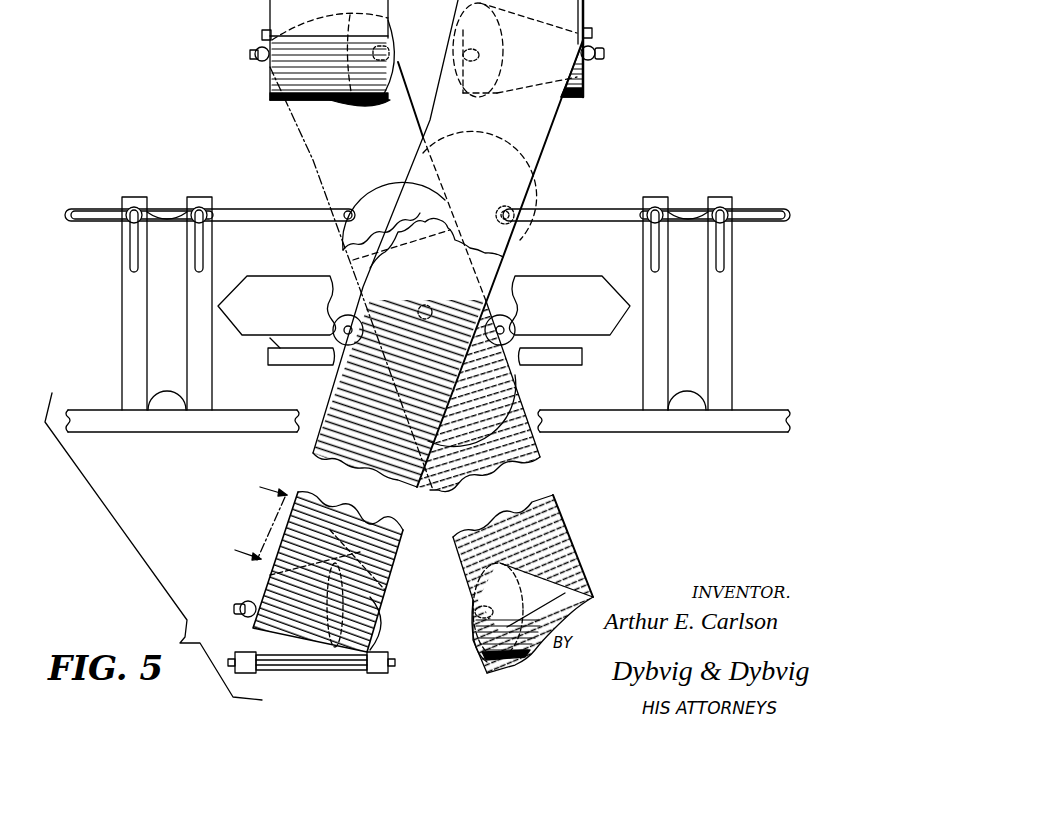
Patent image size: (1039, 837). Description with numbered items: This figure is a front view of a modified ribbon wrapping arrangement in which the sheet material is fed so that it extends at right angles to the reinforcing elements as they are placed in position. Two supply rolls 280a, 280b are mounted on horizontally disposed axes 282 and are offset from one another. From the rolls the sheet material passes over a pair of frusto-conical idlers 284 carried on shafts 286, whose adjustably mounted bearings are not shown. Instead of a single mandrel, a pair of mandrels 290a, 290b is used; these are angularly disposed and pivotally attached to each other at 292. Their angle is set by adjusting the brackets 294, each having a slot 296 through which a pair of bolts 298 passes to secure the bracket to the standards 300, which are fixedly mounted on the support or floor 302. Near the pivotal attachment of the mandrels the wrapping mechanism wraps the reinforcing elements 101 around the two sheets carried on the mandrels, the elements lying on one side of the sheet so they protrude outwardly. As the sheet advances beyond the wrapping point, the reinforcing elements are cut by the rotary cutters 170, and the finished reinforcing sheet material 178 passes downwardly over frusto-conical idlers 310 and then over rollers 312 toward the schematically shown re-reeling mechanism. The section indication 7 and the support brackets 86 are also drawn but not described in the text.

The roll 280a is at (299, 53).
The roll 280b is at (548, 48).
The horizontally disposed axis 282 is at (262, 34).
The frusto-conical idler 284 is at (462, 16).
The shaft 286 is at (257, 56).
The mandrel 290a is at (367, 160).
The mandrel 290b is at (505, 141).
The pivotal attachment point 292 is at (425, 304).
The bracket 294 is at (270, 212).
The slot 296 is at (84, 215).
The bolt 298 is at (135, 207).
The standard 300 is at (127, 295).
The support or floor 302 is at (152, 422).
The support bracket 86 is at (280, 290).
The rotary cutter 170 is at (333, 326).
The reinforcing element 101 is at (338, 516).
The reinforcing sheet material 178 is at (398, 555).
The frusto-conical idler 310 is at (255, 598).
The roller 312 is at (380, 673).
The section line 7 is at (262, 527).